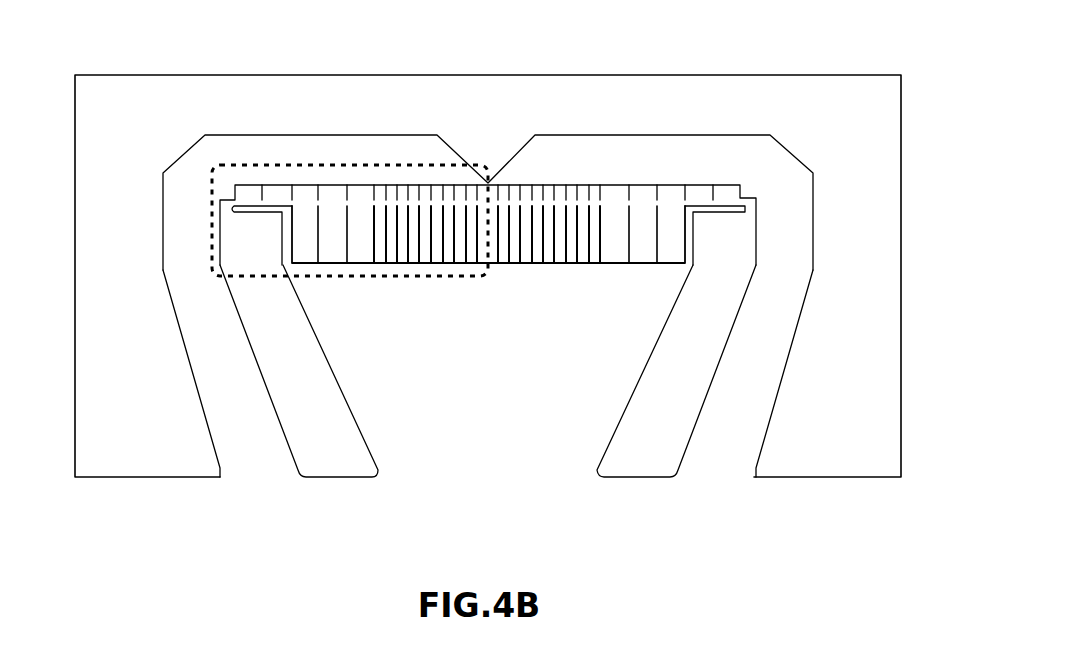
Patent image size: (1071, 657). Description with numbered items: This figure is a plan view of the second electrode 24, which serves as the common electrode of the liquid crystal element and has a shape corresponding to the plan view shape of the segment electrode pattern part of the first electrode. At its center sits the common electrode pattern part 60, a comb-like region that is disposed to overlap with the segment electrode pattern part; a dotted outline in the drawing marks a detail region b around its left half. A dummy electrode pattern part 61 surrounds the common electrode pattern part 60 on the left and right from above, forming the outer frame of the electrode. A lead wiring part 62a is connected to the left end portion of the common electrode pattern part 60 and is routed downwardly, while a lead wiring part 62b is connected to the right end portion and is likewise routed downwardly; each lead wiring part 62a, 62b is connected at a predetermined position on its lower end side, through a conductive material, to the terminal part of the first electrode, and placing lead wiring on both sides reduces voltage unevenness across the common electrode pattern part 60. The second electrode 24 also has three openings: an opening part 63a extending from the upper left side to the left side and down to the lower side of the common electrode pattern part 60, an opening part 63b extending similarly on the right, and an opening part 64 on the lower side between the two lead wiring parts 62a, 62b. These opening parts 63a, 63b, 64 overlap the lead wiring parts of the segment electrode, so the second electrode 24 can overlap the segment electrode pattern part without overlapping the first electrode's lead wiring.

The second electrode 24 is at (864, 65).
The dummy electrode pattern part 61 is at (152, 85).
The common electrode pattern part 60 is at (508, 170).
The region b is at (478, 172).
The lead wiring part 62a is at (343, 460).
The lead wiring part 62b is at (640, 460).
The opening part 63a is at (230, 375).
The opening part 63b is at (745, 375).
The opening part 64 is at (480, 403).